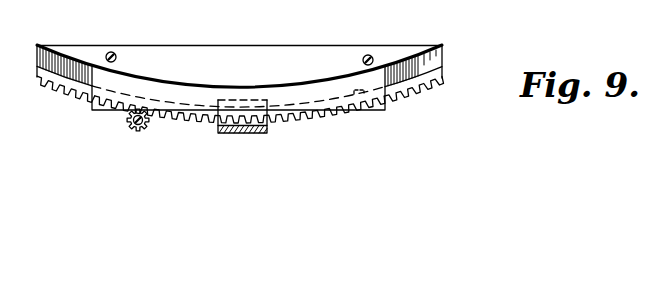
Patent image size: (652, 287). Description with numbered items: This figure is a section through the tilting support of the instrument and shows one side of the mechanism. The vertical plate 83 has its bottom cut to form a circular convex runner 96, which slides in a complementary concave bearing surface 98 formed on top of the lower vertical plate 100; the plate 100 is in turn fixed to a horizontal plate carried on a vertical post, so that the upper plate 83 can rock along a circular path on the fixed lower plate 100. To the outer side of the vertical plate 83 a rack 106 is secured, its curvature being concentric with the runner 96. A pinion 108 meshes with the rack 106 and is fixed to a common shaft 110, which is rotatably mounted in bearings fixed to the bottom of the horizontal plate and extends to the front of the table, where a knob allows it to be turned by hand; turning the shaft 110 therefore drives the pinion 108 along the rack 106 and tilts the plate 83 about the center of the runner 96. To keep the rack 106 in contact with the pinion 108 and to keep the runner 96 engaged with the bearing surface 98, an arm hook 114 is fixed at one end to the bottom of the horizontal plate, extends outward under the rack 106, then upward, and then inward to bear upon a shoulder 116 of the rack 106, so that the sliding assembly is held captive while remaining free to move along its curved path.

The vertical plate 83 is at (239, 42).
The circular convex runner 96 is at (239, 66).
The concave bearing surface 98 is at (239, 88).
The vertical plate 100 is at (413, 84).
The rack 106 is at (66, 93).
The pinion 108 is at (121, 132).
The common shaft 110 is at (164, 136).
The arm hook 114 is at (242, 132).
The shoulder 116 is at (353, 117).